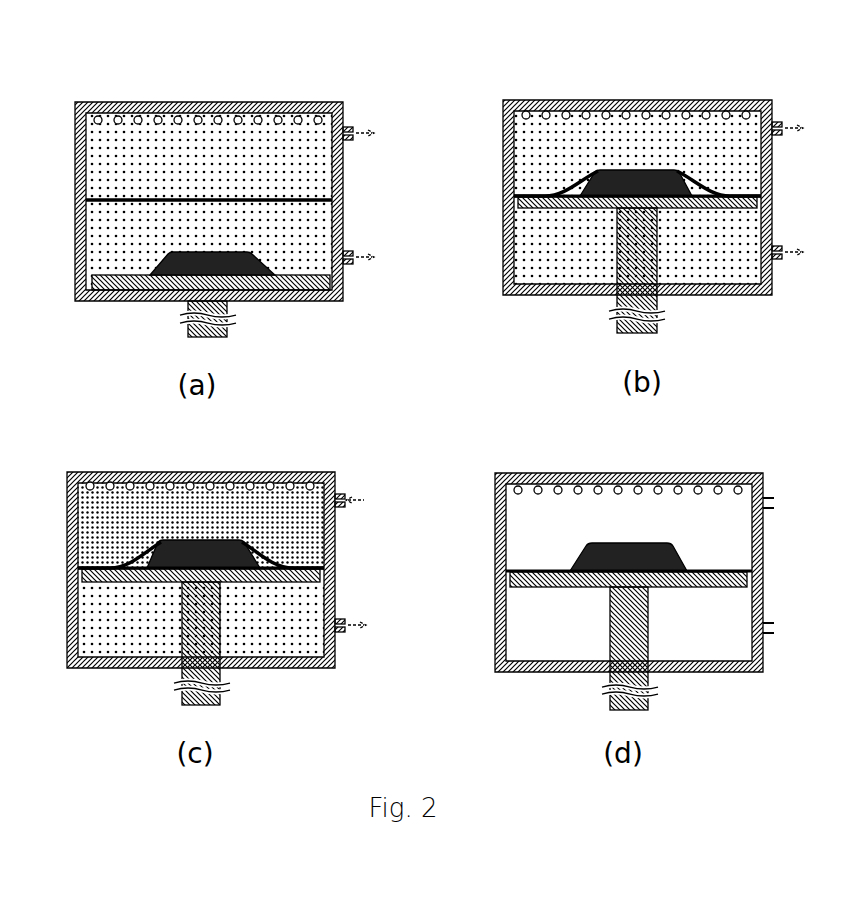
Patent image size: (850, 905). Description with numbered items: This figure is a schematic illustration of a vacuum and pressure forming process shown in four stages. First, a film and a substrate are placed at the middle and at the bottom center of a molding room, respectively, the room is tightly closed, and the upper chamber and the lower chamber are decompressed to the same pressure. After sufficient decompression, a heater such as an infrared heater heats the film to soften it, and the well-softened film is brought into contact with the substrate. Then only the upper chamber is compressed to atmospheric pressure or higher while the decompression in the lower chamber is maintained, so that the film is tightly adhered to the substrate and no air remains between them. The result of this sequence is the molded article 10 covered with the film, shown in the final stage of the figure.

The molded article 10 is at (634, 527).